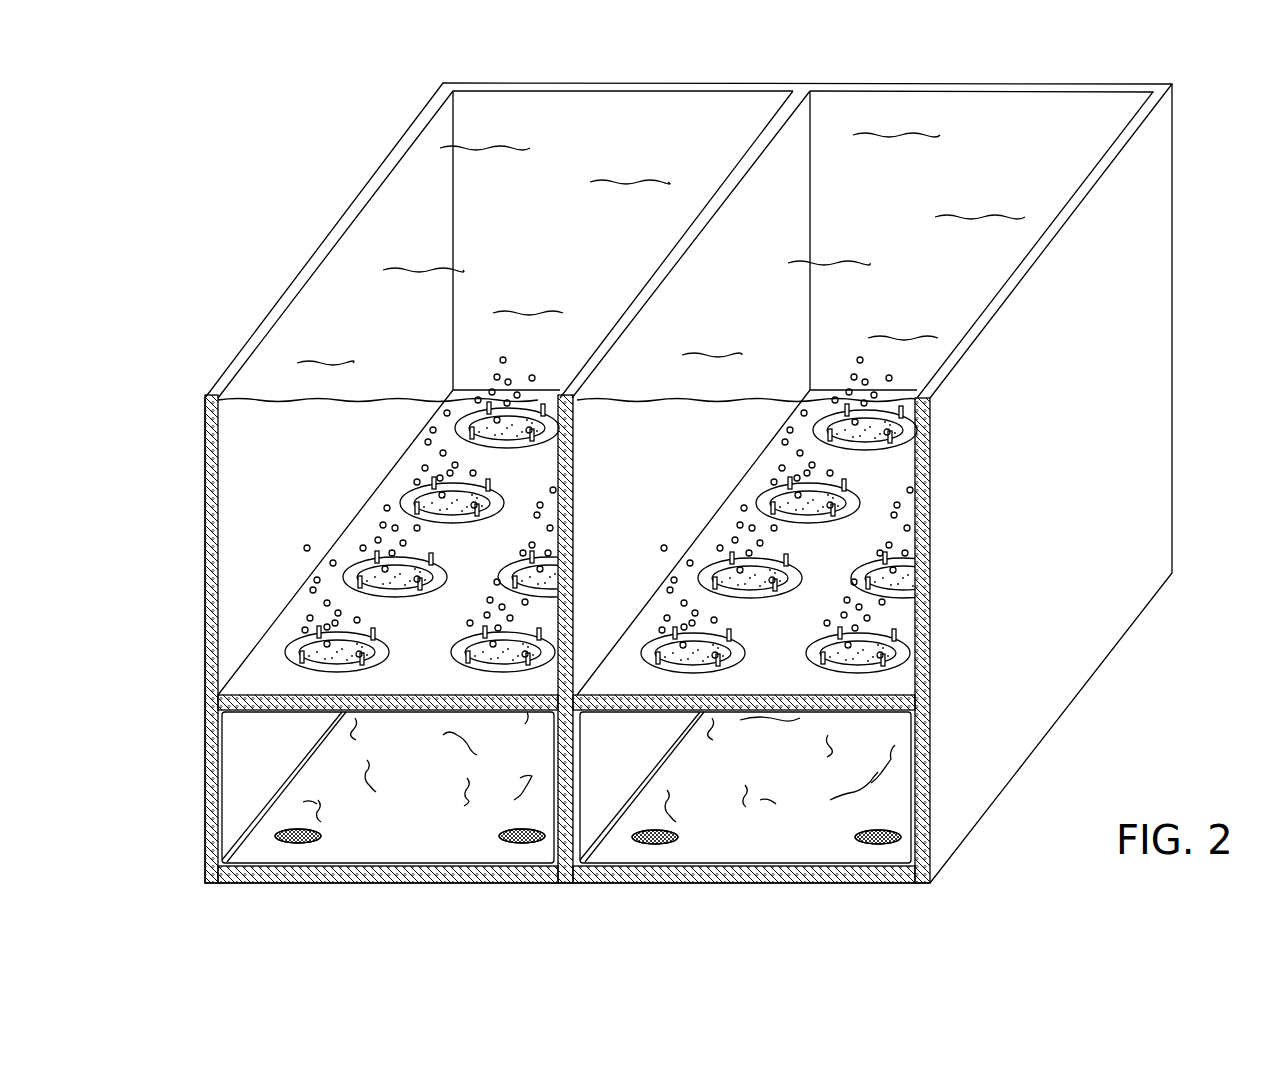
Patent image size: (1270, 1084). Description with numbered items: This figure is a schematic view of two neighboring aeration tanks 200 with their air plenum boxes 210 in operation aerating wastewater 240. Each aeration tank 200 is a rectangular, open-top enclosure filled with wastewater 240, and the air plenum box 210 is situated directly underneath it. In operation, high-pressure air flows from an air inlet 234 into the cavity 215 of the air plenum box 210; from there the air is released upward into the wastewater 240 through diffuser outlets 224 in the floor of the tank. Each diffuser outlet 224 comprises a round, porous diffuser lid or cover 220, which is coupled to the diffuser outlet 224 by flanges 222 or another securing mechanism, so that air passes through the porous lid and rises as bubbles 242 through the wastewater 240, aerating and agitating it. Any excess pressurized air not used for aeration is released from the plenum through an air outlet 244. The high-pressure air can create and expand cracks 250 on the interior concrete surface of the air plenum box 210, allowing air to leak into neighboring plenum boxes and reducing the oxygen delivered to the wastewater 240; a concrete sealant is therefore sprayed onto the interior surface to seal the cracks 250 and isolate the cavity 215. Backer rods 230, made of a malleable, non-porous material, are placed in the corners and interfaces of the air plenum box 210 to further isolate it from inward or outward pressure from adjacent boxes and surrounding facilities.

The aeration tank 200 is at (207, 380).
The wastewater 240 is at (470, 132).
The bubbles 242 is at (476, 472).
The diffuser outlet 224 is at (352, 548).
The diffuser lid 220 is at (425, 573).
The flanges 222 is at (378, 643).
The air plenum box 210 is at (250, 758).
The cavity 215 is at (391, 846).
The cracks 250 is at (463, 748).
The air outlet 244 is at (322, 833).
The air inlet 234 is at (502, 832).
The backer rods 230 is at (747, 864).